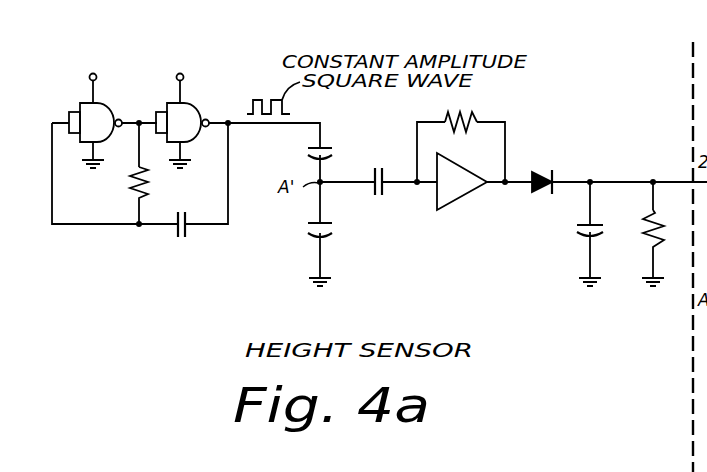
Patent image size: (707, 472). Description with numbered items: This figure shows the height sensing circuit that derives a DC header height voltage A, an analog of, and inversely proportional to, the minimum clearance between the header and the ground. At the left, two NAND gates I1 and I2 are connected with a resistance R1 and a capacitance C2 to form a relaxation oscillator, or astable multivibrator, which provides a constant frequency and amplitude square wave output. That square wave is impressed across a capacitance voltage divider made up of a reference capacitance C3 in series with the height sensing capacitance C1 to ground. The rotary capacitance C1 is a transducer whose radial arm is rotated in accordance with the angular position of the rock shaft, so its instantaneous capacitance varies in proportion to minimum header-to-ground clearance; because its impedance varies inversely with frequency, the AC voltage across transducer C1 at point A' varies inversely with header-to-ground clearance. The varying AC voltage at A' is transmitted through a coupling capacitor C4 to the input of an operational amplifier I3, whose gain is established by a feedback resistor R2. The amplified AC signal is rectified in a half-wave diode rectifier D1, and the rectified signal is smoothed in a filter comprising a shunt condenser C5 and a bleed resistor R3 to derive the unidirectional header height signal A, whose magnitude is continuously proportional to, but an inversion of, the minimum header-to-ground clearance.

The NAND gate I1 is at (111, 113).
The NAND gate I2 is at (198, 113).
The operational amplifier I3 is at (442, 202).
The resistance R1 is at (132, 197).
The feedback resistor R2 is at (477, 120).
The bleed resistor R3 is at (647, 247).
The rotary capacitance C1 is at (308, 222).
The capacitance C2 is at (177, 233).
The reference capacitance C3 is at (308, 148).
The coupling capacitor C4 is at (375, 195).
The shunt condenser C5 is at (577, 225).
The half-wave diode rectifier D1 is at (540, 173).